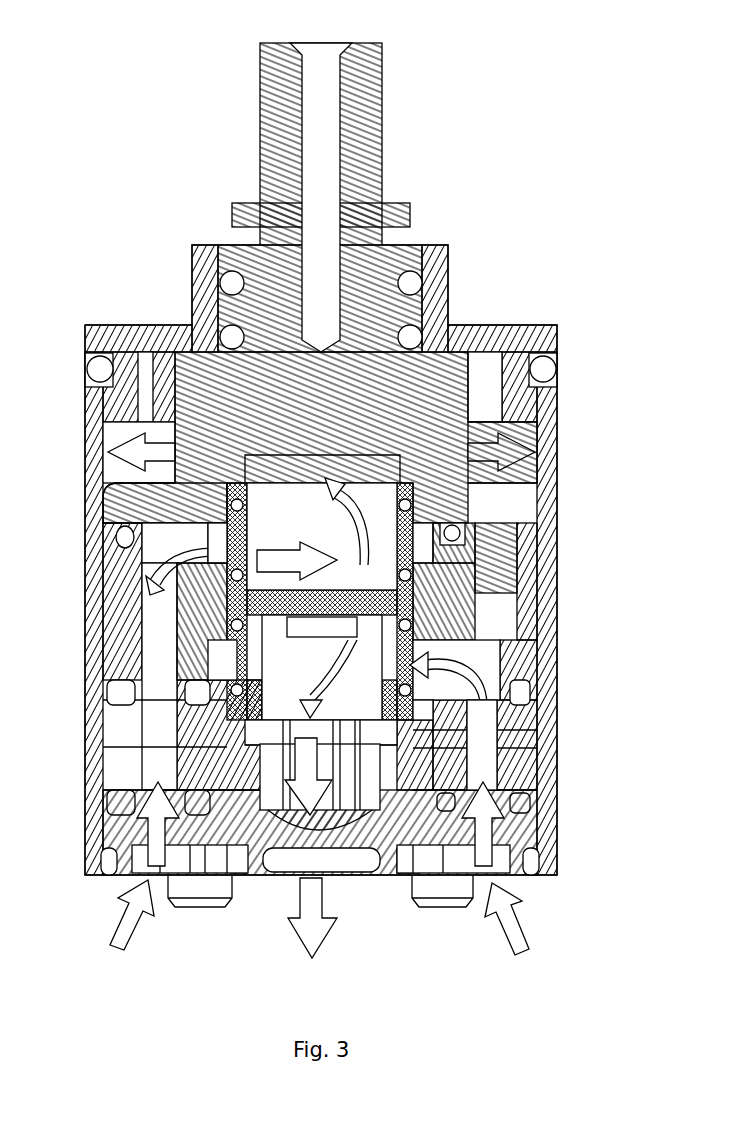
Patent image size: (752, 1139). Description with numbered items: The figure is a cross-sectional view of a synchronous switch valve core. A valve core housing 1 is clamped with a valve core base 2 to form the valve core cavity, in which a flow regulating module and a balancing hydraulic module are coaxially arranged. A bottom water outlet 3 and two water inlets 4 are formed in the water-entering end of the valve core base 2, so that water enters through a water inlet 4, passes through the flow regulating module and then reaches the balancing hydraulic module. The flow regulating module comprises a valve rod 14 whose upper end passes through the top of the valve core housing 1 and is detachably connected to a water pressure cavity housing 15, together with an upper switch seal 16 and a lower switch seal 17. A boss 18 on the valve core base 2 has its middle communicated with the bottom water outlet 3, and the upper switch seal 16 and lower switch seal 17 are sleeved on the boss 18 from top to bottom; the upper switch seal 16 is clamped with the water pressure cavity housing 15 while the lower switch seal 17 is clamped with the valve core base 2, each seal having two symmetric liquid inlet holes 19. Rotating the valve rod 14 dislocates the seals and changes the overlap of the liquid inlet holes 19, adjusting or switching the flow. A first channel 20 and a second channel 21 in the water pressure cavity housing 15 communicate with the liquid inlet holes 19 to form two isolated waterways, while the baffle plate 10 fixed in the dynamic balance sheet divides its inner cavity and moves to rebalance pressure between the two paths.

The valve core housing 1 is at (557, 450).
The valve core base 2 is at (557, 845).
The bottom water outlet 3 is at (322, 880).
The water inlet 4 is at (152, 880).
The baffle plate 10 is at (277, 568).
The valve rod 14 is at (260, 140).
The water pressure cavity housing 15 is at (85, 500).
The upper switch seal 16 is at (105, 727).
The lower switch seal 17 is at (103, 782).
The boss 18 is at (420, 733).
The liquid inlet hole 19 is at (485, 775).
The first channel 20 is at (85, 602).
The second channel 21 is at (483, 660).